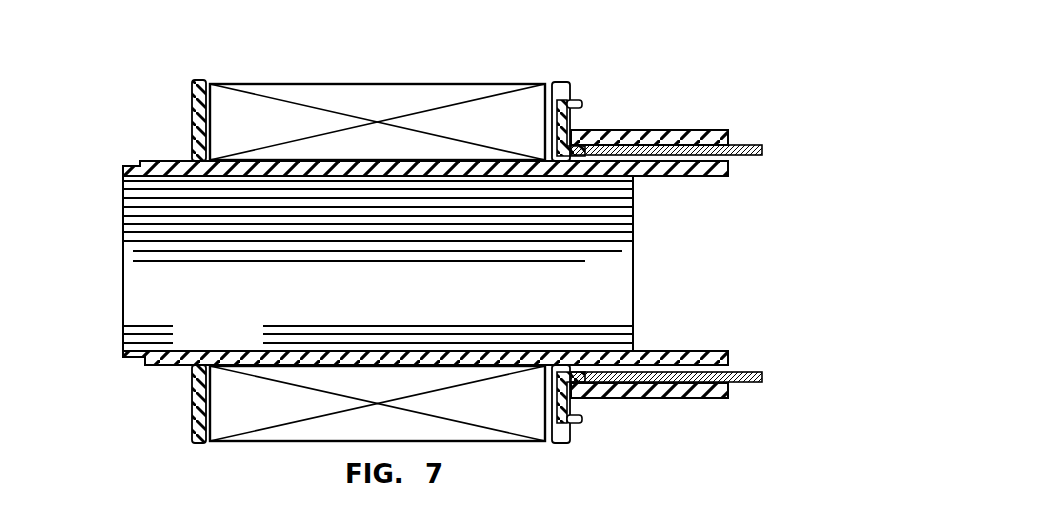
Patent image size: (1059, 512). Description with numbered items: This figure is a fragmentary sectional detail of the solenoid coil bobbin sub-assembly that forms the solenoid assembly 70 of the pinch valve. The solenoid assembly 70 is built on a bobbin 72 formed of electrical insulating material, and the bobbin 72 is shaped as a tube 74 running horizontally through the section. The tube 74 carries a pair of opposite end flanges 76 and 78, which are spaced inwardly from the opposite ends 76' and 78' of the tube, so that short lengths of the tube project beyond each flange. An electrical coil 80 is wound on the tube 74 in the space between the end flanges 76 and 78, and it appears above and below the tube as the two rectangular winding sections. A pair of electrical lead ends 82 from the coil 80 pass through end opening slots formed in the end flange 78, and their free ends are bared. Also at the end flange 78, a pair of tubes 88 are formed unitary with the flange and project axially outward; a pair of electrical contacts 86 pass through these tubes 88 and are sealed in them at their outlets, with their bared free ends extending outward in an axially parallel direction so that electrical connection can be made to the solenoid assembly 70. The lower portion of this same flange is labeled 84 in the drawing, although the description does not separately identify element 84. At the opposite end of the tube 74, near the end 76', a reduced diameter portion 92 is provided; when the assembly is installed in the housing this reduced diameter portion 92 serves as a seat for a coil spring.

The solenoid assembly 70 is at (458, 73).
The bobbin 72 is at (265, 349).
The tube 74 is at (202, 326).
The end flange 76 is at (177, 240).
The end of tube 76' is at (88, 141).
The end flange 78 is at (606, 100).
The end of tube 78' is at (685, 263).
The electrical coil 80 is at (287, 86).
The electrical lead ends 82 is at (583, 99).
The flange 84 is at (560, 445).
The electrical contacts 86 is at (695, 140).
The tubes 88 is at (633, 130).
The reduced diameter portion 92 is at (138, 163).